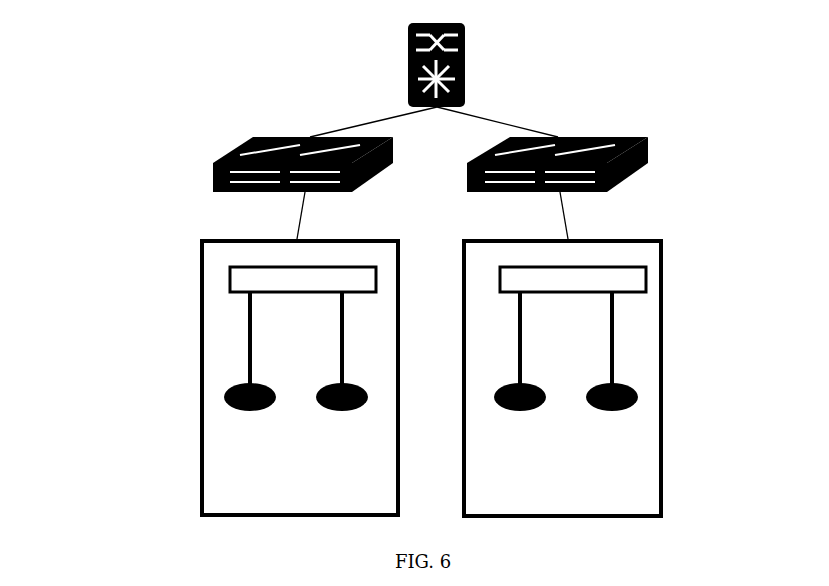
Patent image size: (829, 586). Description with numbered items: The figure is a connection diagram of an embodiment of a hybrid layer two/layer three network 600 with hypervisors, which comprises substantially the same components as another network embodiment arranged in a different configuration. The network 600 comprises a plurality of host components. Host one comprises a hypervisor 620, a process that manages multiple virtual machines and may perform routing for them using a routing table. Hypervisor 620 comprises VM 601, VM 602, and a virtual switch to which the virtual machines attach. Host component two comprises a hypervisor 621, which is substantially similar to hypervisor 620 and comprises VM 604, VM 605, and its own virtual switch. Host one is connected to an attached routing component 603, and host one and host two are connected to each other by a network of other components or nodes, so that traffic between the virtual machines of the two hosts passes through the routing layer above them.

The hybrid layer 2/layer 3 network 600 is at (160, 98).
The attached routing component 603 is at (213, 165).
The hypervisor 620 is at (240, 378).
The hypervisor 621 is at (610, 378).
The VM 601 is at (250, 411).
The VM 602 is at (342, 411).
The VM 604 is at (520, 411).
The VM 605 is at (612, 411).